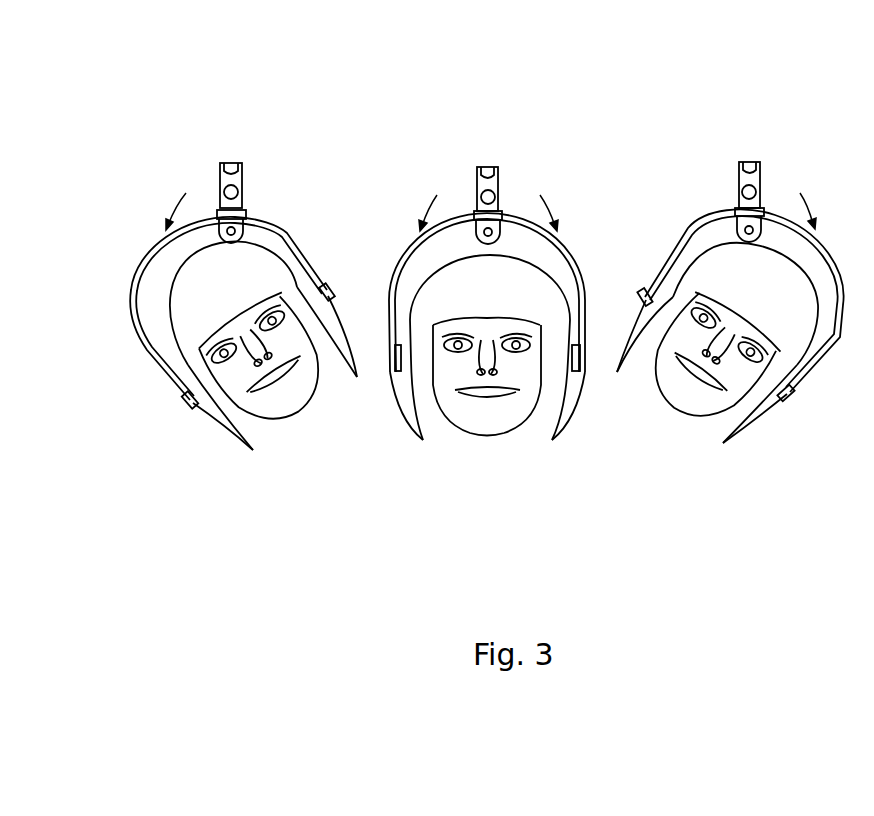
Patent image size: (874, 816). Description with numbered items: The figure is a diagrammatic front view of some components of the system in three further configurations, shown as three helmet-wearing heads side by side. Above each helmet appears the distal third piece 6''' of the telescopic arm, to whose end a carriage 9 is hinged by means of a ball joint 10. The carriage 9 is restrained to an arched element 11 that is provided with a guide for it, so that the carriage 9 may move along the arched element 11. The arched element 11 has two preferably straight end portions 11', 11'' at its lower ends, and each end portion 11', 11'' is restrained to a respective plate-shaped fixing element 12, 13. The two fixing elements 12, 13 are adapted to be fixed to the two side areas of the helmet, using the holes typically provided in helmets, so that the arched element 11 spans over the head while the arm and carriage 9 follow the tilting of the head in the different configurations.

The third piece of telescopic arm 6''' is at (459, 132).
The carriage 9 is at (217, 222).
The ball joint 10 is at (225, 194).
The arched element 11 is at (443, 207).
The end portion 11' is at (375, 307).
The end portion 11'' is at (566, 298).
The fixing element 12 is at (290, 296).
The fixing element 13 is at (188, 410).